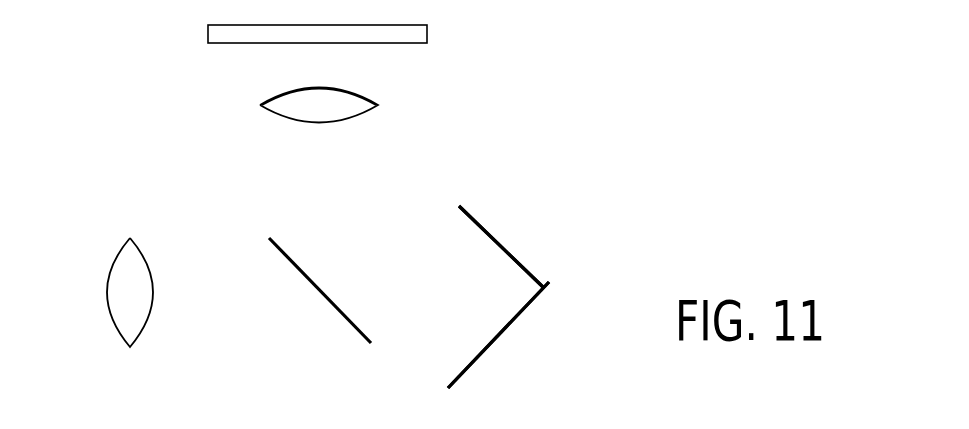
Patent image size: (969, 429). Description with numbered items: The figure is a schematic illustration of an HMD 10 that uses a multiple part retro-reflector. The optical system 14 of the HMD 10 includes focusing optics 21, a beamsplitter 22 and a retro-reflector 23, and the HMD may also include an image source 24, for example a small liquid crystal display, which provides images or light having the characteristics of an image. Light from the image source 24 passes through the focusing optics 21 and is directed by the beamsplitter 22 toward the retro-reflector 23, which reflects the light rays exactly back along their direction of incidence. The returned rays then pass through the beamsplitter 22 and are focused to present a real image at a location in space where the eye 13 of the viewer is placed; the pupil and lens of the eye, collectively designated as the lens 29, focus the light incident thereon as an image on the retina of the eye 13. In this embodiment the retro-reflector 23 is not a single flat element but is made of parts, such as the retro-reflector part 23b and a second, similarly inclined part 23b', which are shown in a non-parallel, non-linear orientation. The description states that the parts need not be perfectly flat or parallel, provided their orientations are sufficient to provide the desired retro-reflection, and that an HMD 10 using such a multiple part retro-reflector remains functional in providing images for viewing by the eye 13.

The HMD 10 is at (117, 157).
The eye 13 is at (86, 255).
The optical system 14 is at (224, 106).
The focusing optics 21 is at (254, 130).
The beamsplitter 22 is at (305, 270).
The retro-reflector 23 is at (578, 263).
The retro-reflector part 23b is at (507, 342).
The mirror 23b' is at (508, 235).
The image source 24 is at (233, 45).
The lens 29 is at (148, 257).